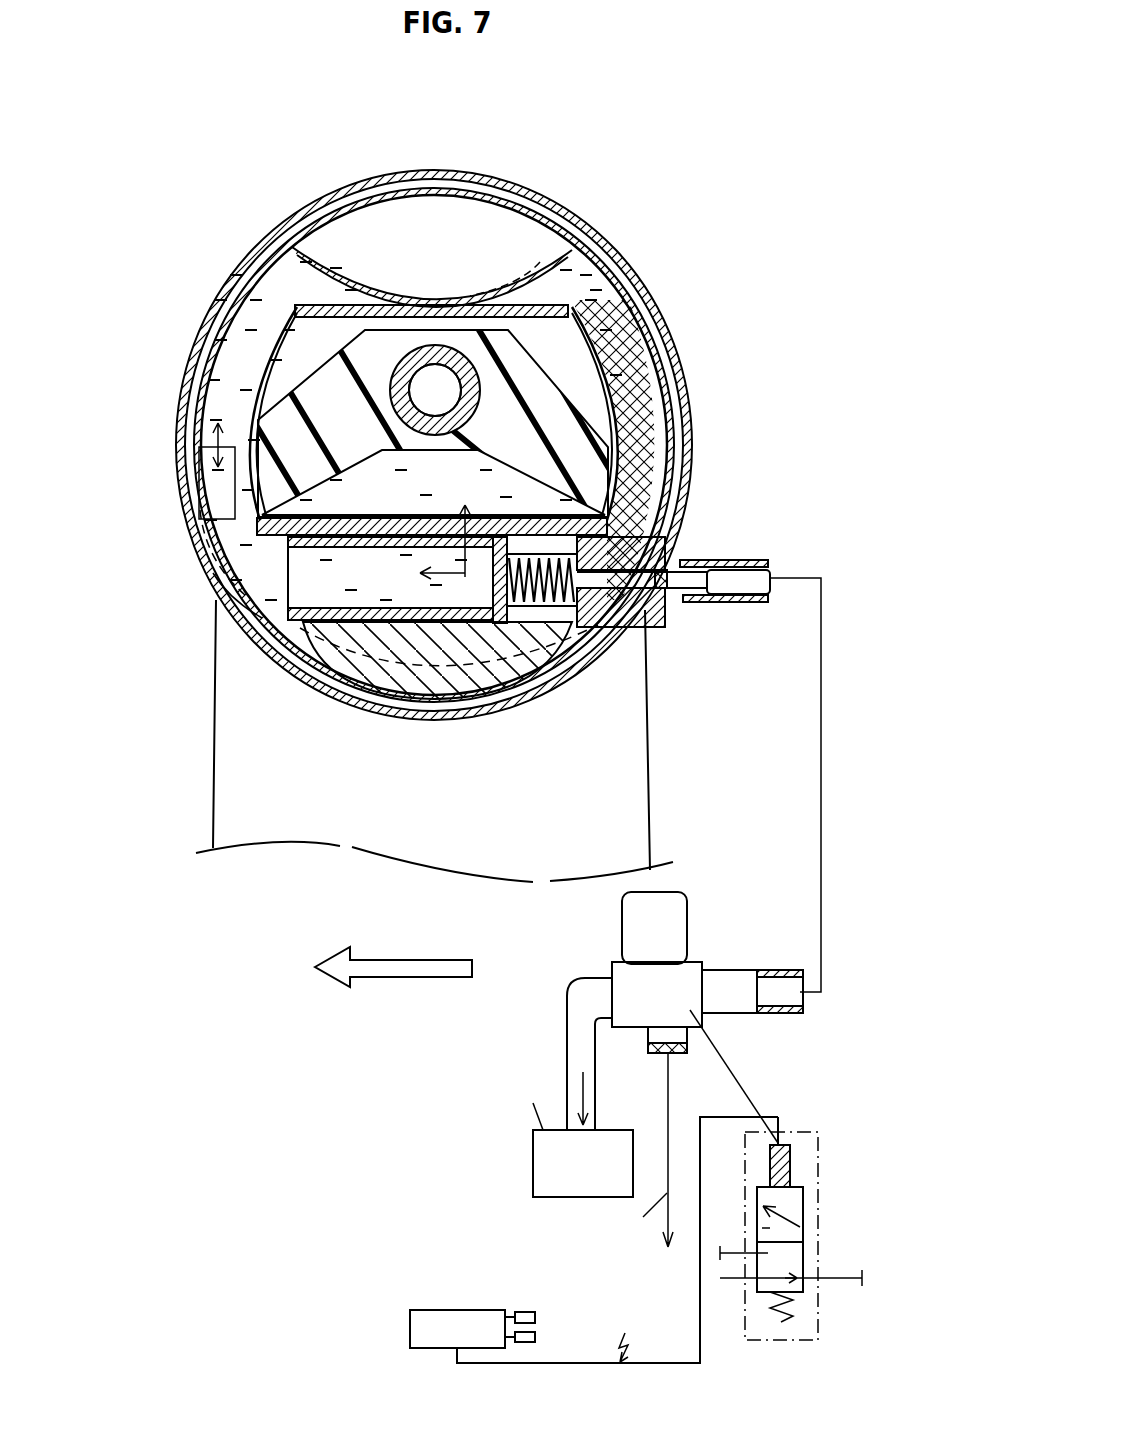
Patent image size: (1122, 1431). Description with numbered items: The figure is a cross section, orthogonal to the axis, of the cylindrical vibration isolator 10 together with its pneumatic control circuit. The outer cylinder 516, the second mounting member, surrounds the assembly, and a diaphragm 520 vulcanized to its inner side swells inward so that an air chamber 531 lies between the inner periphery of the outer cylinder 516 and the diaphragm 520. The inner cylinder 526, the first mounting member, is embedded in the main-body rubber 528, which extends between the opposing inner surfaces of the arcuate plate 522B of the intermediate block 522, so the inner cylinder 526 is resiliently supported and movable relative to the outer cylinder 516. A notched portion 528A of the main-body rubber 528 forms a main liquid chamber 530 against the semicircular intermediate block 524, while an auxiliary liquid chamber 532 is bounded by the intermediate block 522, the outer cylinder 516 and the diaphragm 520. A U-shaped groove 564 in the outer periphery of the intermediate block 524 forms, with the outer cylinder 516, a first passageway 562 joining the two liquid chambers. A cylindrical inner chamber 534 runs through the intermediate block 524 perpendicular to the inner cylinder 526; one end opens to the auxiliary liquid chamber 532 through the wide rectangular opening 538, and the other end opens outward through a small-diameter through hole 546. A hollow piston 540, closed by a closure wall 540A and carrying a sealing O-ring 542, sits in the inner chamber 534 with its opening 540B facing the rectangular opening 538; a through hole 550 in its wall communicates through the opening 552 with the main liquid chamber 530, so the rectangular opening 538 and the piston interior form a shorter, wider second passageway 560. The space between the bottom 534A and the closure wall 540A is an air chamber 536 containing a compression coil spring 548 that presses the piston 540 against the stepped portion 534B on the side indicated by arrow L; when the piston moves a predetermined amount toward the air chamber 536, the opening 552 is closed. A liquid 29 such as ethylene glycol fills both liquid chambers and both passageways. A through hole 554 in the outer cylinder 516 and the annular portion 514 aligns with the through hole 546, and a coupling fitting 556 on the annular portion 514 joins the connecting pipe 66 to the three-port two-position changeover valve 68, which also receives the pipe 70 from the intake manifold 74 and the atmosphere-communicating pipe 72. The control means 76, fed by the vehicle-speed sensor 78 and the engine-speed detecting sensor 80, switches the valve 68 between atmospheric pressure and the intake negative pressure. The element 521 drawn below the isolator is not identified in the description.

The cylindrical vibration isolator 10 is at (745, 222).
The annular portion 514 is at (516, 176).
The outer cylinder 516 is at (603, 270).
The diaphragm 520 is at (540, 259).
The inner cylinder 526 is at (543, 256).
The air chamber 531 is at (410, 245).
The auxiliary liquid chamber 532 is at (322, 264).
The main-body rubber 528 is at (640, 350).
The notched portion 528A is at (582, 418).
The compression coil spring 548 is at (530, 548).
The inner chamber 534 is at (681, 472).
The bottom of inner chamber 534A is at (585, 660).
The stepped portion 534B is at (290, 643).
The intermediate block 522 is at (250, 370).
The arcuate plate 522B is at (317, 277).
The intermediate block 524 is at (210, 423).
The liquid 29 is at (243, 323).
The rectangular opening 538 is at (200, 470).
The first passageway 562 is at (200, 511).
The groove 564 is at (213, 574).
The second passageway 560 is at (252, 576).
The main liquid chamber 530 is at (415, 504).
The opening 552 is at (437, 528).
The through hole 550 is at (447, 554).
The hollow piston 540 is at (323, 637).
The closure wall 540A is at (500, 624).
The piston opening 540B is at (262, 626).
The sealing O-ring 542 is at (527, 640).
The through hole 546 is at (632, 650).
The coupling fitting 556 is at (675, 598).
The through hole 554 is at (680, 567).
The air chamber 536 is at (558, 672).
The fuel tank 521 is at (662, 776).
The three-port two-position changeover valve 68 is at (694, 904).
The connecting pipe 66 is at (751, 560).
The pipe 70 is at (597, 974).
The atmosphere-communicating pipe 72 is at (647, 1043).
The intake manifold 74 is at (533, 1180).
The control means 76 is at (437, 1310).
The vehicle-speed sensor 78 is at (540, 1318).
The engine-speed detecting sensor 80 is at (537, 1338).
The arrow L is at (405, 979).